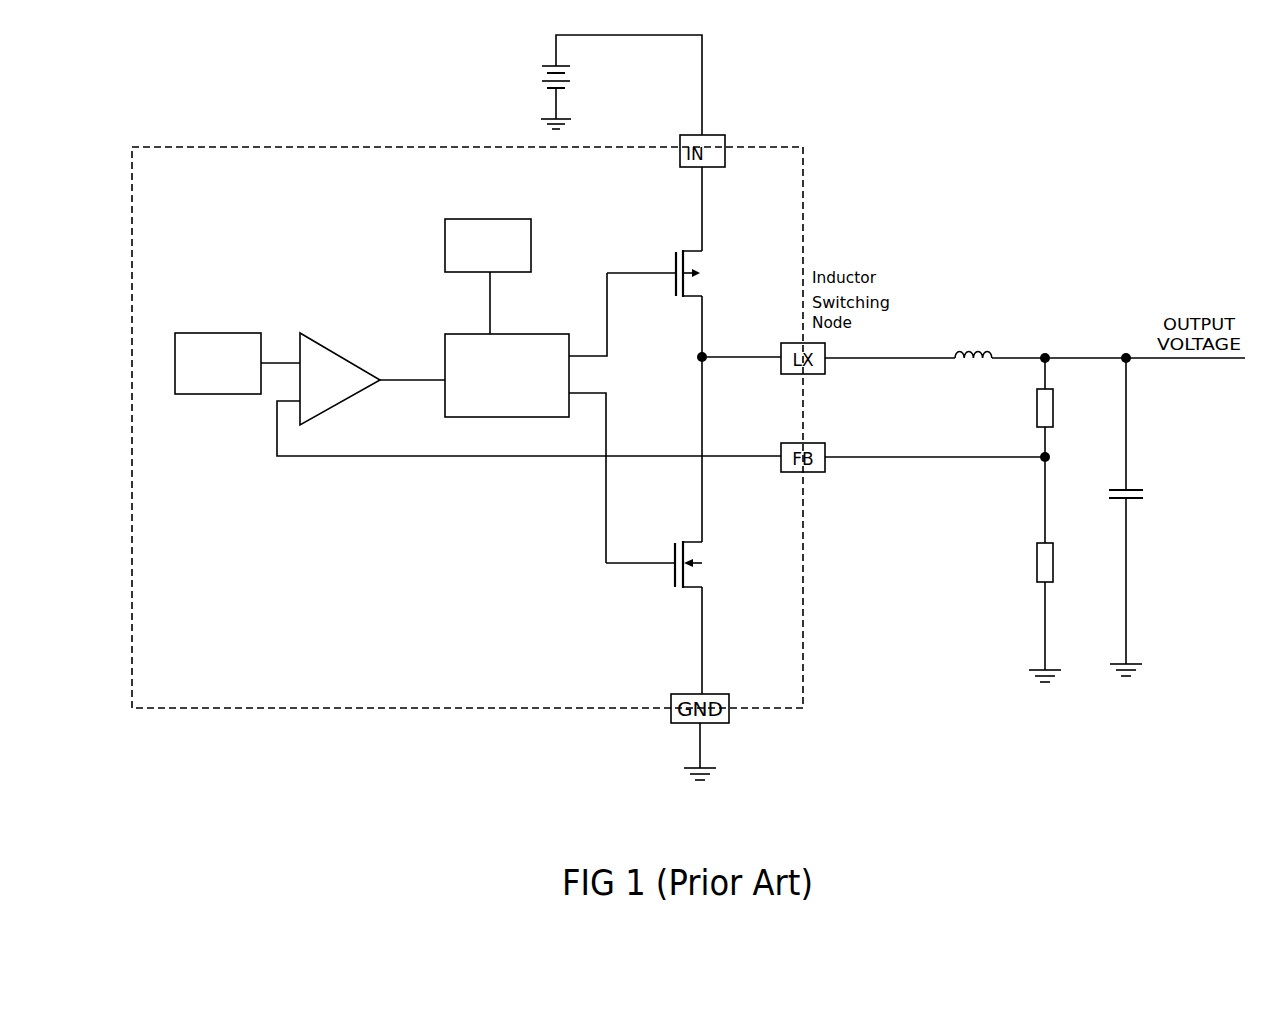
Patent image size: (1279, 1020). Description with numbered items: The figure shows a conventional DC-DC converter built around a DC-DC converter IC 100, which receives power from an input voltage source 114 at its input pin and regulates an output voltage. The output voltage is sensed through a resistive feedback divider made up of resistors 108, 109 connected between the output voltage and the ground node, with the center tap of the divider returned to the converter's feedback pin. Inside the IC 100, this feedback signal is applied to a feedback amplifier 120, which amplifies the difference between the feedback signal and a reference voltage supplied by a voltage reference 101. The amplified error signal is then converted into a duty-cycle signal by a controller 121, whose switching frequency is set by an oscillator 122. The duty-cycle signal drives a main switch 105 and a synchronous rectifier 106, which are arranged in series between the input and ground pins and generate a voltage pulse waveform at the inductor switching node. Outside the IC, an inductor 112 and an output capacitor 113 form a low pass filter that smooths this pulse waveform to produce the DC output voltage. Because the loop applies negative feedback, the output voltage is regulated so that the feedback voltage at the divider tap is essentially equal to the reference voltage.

The DC-DC converter IC 100 is at (467, 427).
The voltage reference 101 is at (218, 352).
The main switch 105 is at (684, 279).
The synchronous rectifier 106 is at (706, 571).
The resistor 108 is at (1026, 407).
The resistor 109 is at (1030, 569).
The inductor 112 is at (979, 376).
The output capacitor 113 is at (1143, 517).
The input voltage source 114 is at (567, 91).
The feedback amplifier 120 is at (348, 391).
The controller 121 is at (507, 360).
The oscillator 122 is at (488, 262).